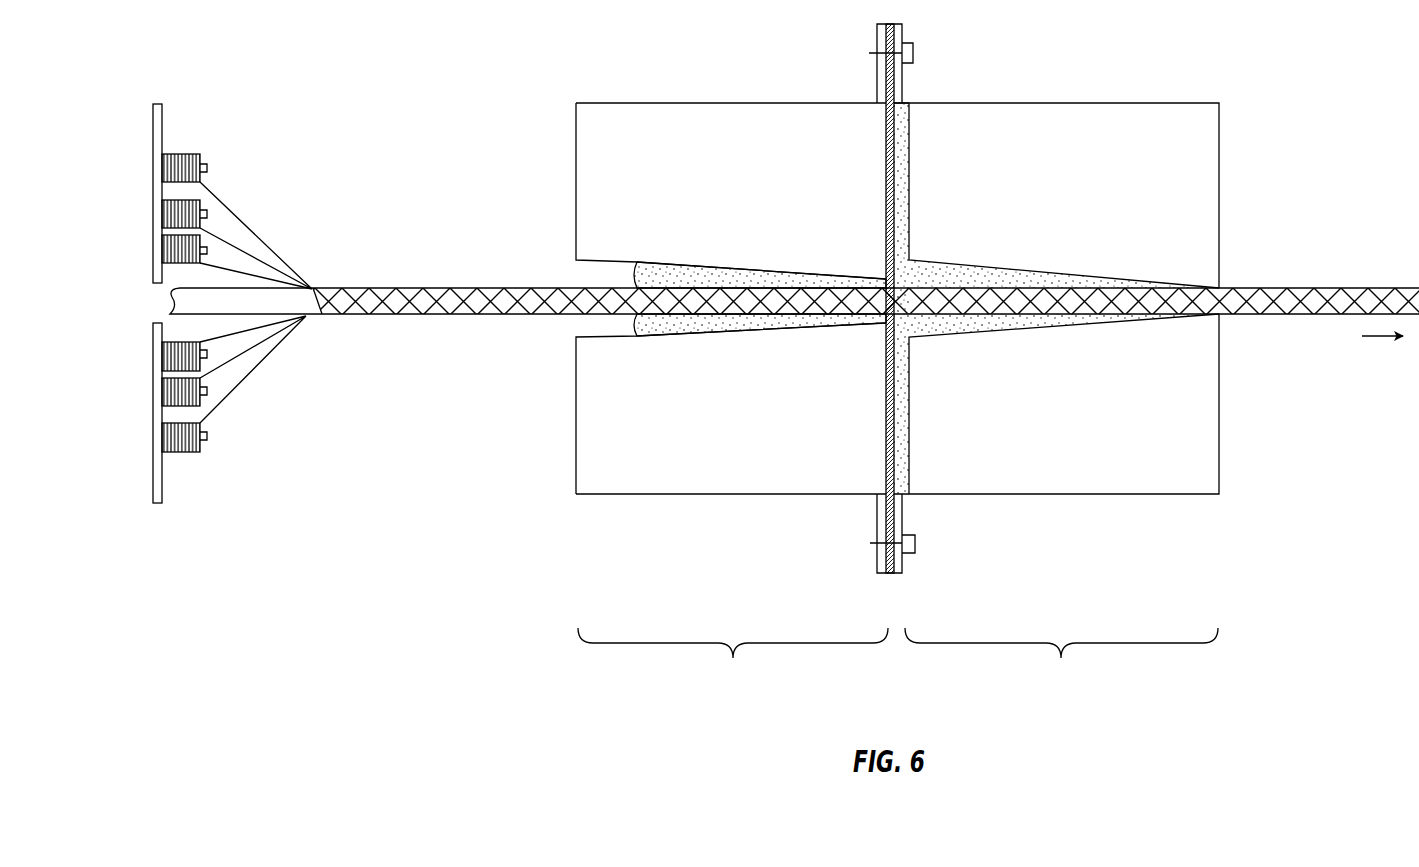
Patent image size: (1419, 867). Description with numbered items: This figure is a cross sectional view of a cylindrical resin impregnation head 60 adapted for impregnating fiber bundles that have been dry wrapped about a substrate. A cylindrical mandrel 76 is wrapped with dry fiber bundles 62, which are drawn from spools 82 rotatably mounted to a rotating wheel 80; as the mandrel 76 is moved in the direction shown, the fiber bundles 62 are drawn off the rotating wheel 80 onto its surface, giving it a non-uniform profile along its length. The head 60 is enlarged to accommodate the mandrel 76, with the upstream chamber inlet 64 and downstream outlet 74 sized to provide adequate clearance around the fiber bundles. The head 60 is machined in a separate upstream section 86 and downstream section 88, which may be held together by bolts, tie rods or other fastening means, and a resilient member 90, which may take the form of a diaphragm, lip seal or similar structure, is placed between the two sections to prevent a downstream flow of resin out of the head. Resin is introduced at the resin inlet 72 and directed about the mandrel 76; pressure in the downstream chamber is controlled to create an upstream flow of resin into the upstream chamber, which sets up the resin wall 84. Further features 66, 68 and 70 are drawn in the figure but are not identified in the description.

The resin impregnation head 60 is at (596, 67).
The fiber bundles 62 is at (375, 288).
The upstream chamber inlet 64 is at (570, 330).
The die entrance 66 is at (578, 503).
The divider bolt 68 is at (892, 324).
The die exit 70 is at (1219, 503).
The resin inlet 72 is at (918, 96).
The downstream outlet 74 is at (1227, 322).
The cylindrical mandrel 76 is at (173, 303).
The rotating wheel 80 is at (163, 482).
The spools 82 is at (202, 437).
The resin wall 84 is at (636, 283).
The upstream section 86 is at (733, 662).
The downstream section 88 is at (1061, 662).
The resilient member 90 is at (1222, 284).